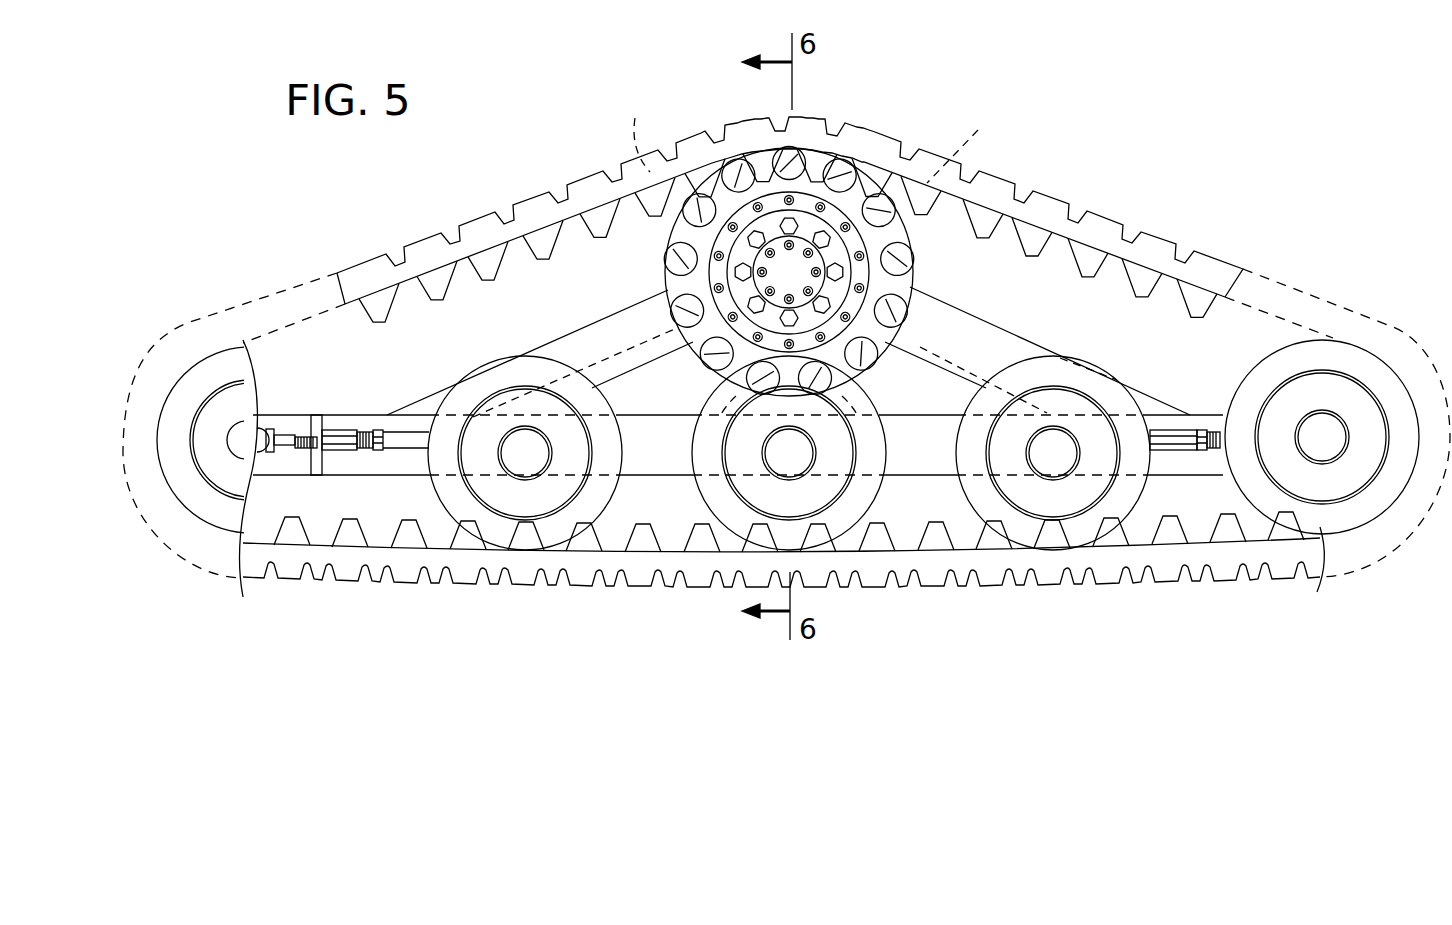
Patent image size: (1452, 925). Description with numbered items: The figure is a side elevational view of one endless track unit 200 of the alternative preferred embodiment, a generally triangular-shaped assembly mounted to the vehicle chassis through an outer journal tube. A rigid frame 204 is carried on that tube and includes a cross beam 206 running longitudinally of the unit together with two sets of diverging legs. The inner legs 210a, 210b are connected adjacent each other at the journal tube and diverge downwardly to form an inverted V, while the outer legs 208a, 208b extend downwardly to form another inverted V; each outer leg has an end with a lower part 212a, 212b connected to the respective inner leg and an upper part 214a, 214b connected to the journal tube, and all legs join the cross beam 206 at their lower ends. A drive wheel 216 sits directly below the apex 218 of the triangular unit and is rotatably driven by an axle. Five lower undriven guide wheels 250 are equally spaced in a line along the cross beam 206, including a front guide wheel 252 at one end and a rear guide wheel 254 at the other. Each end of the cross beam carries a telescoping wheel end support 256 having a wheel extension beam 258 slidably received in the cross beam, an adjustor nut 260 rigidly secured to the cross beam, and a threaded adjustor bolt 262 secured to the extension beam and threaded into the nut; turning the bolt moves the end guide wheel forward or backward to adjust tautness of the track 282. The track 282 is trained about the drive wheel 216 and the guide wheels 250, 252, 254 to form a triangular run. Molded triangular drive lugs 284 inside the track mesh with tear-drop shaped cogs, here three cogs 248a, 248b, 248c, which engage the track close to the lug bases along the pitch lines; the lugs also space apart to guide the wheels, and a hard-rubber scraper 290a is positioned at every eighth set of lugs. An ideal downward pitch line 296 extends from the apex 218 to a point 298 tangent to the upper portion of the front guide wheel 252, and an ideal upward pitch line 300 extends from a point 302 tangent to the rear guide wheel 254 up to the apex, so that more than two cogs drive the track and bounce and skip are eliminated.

The endless track unit 200 is at (1110, 168).
The rigid frame 204 is at (560, 318).
The cross beam 206 is at (673, 467).
The outer leg 208a is at (625, 315).
The outer leg 208b is at (950, 313).
The inner leg 210a is at (683, 380).
The inner leg 210b is at (993, 370).
The lower part 212a is at (575, 372).
The lower part 212b is at (893, 333).
The upper part 214a is at (637, 130).
The upper part 214b is at (970, 140).
The drive wheel 216 is at (772, 217).
The apex 218 is at (800, 150).
The cog 248a is at (730, 163).
The cog 248b is at (835, 135).
The cog 248c is at (840, 126).
The lower undriven guide wheel 250 is at (498, 500).
The front guide wheel 252 is at (198, 508).
The rear guide wheel 254 is at (1350, 527).
The telescoping wheel end support 256 is at (320, 492).
The wheel extension beam 258 is at (270, 420).
The adjustor nut 260 is at (337, 447).
The threaded adjustor bolt 262 is at (290, 430).
The track 282 is at (930, 555).
The drive lug 284 is at (983, 220).
The scraper 290a is at (760, 118).
The ideal downward pitch line 296 is at (478, 258).
The point 298 is at (222, 350).
The ideal upward pitch line 300 is at (1158, 252).
The point 302 is at (1338, 340).